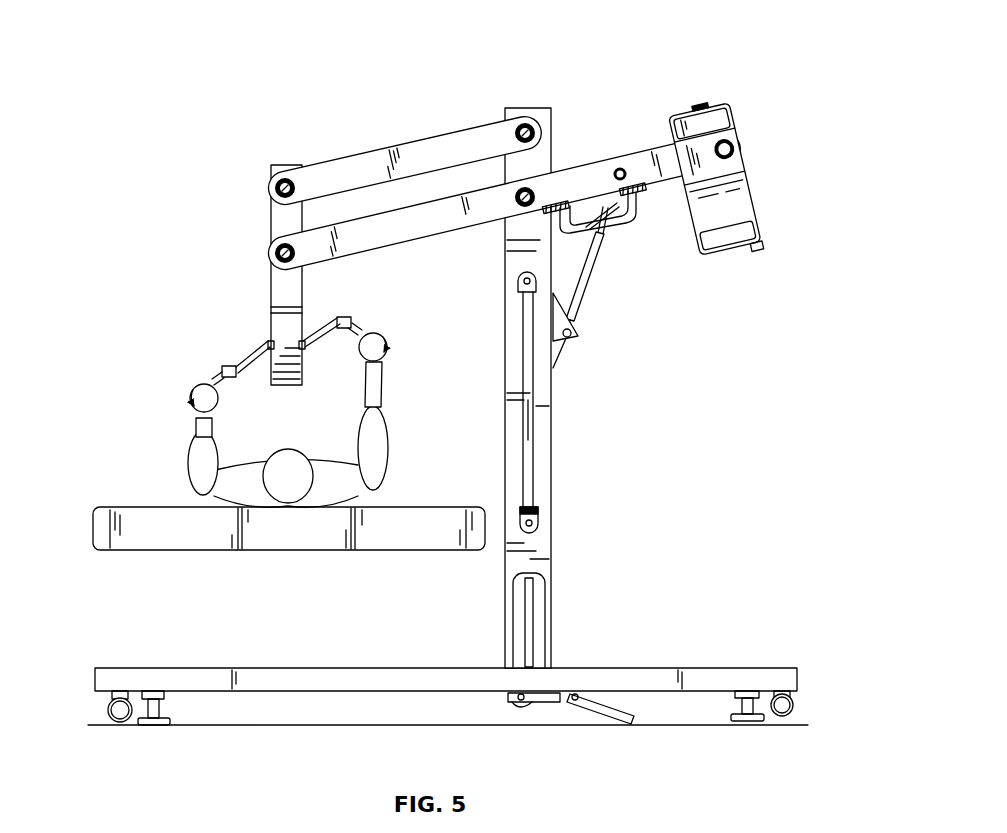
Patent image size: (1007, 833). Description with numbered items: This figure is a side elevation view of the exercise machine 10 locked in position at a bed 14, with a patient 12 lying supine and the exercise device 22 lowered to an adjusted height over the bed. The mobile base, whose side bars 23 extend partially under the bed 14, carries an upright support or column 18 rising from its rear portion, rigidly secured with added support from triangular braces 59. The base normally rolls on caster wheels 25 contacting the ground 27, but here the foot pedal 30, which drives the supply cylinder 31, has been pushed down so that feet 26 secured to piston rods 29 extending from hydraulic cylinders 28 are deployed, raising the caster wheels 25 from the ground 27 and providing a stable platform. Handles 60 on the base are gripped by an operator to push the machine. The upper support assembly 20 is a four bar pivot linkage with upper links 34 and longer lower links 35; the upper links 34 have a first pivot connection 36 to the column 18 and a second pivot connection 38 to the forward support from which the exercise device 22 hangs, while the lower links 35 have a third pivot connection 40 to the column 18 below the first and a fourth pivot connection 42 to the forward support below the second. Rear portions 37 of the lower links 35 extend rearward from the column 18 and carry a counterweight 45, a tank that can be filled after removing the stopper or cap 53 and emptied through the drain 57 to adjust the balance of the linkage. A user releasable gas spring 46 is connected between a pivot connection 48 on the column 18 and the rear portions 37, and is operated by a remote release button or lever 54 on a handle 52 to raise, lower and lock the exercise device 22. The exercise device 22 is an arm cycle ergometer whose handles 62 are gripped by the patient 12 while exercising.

The exercise machine 10 is at (704, 39).
The patient 12 is at (288, 455).
The bed 14 is at (150, 506).
The upright support or column 18 is at (543, 420).
The upper support assembly 20 is at (474, 129).
The exercise device 22 is at (266, 338).
The side bars 23 is at (443, 677).
The caster wheels 25 is at (113, 712).
The feet 26 is at (155, 726).
The ground 27 is at (372, 727).
The hydraulic cylinders 28 is at (153, 694).
The piston rods 29 is at (163, 708).
The foot pedal 30 is at (613, 703).
The supply cylinder 31 is at (543, 700).
The upper links 34 is at (393, 150).
The lower links 35 is at (407, 232).
The first pivot connection 36 is at (548, 117).
The rear portions 37 is at (647, 156).
The second pivot connection 38 is at (275, 183).
The third pivot connection 40 is at (515, 192).
The fourth pivot connection 42 is at (275, 249).
The counterweight 45 is at (748, 203).
The gas spring 46 is at (590, 283).
The pivot connection 48 is at (575, 331).
The handle 52 is at (615, 228).
The stopper or cap 53 is at (713, 100).
The remote release button or lever 54 is at (600, 237).
The drain 57 is at (762, 245).
The triangular braces 59 is at (535, 585).
The handles 60 is at (531, 482).
The handles 62 is at (200, 388).